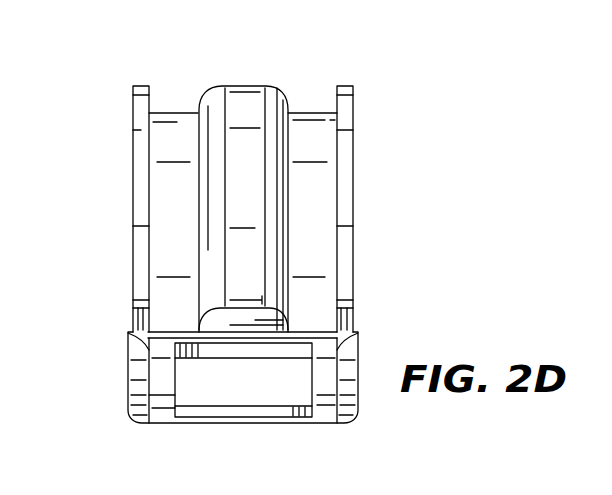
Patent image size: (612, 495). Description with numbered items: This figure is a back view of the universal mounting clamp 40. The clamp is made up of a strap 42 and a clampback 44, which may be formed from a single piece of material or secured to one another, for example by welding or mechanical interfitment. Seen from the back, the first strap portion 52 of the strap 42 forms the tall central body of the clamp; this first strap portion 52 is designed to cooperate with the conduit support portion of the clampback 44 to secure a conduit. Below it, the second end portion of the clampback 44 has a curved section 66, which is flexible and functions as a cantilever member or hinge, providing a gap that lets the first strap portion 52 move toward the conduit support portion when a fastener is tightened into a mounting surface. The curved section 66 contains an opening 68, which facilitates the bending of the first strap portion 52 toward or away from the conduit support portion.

The universal mounting clamp 40 is at (392, 150).
The strap 42 is at (133, 207).
The clampback 44 is at (128, 383).
The first strap portion 52 is at (255, 86).
The curved section 66 is at (158, 398).
The opening 68 is at (245, 383).